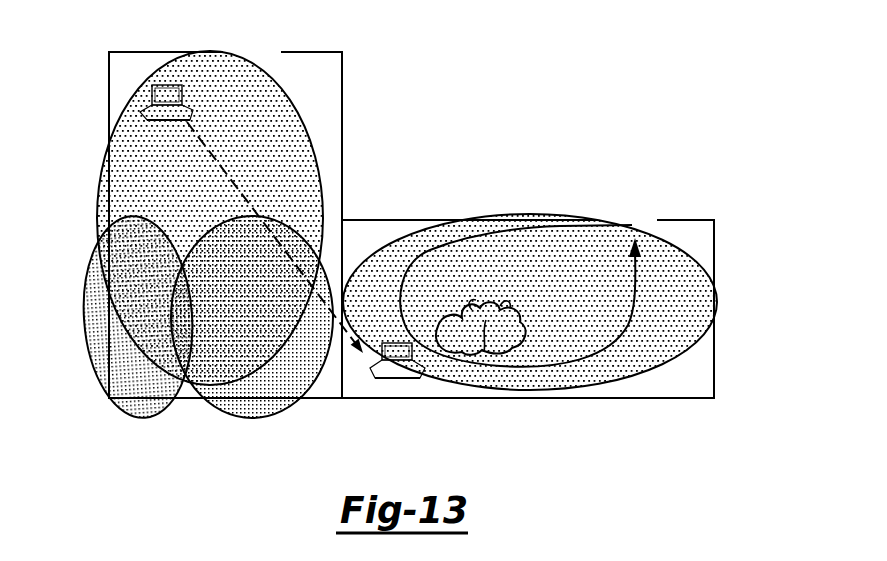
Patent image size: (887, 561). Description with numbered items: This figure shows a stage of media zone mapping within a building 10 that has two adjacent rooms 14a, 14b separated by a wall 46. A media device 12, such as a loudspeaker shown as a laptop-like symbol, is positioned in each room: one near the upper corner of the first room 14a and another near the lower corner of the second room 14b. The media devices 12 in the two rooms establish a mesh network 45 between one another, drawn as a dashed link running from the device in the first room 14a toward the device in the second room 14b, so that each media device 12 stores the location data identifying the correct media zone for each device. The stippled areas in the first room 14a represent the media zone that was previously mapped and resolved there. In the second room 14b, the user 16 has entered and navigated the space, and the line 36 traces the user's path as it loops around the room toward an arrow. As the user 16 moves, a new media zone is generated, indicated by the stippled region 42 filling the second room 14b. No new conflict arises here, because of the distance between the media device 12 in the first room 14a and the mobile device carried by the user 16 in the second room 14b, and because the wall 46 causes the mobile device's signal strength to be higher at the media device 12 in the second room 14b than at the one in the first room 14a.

The building 10 is at (497, 176).
The media device 12 is at (150, 95).
The room 14a is at (109, 112).
The room 14b is at (421, 219).
The user 16 is at (485, 353).
The line 36 is at (592, 360).
The region 42 is at (527, 391).
The mesh network 45 is at (250, 205).
The wall 46 is at (348, 240).